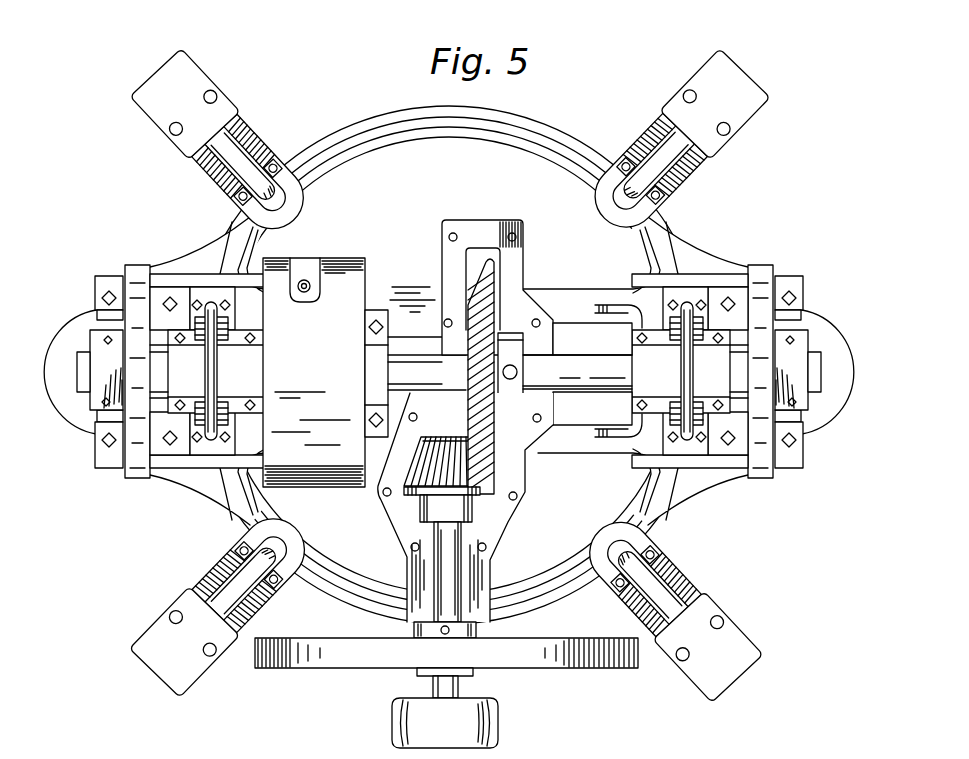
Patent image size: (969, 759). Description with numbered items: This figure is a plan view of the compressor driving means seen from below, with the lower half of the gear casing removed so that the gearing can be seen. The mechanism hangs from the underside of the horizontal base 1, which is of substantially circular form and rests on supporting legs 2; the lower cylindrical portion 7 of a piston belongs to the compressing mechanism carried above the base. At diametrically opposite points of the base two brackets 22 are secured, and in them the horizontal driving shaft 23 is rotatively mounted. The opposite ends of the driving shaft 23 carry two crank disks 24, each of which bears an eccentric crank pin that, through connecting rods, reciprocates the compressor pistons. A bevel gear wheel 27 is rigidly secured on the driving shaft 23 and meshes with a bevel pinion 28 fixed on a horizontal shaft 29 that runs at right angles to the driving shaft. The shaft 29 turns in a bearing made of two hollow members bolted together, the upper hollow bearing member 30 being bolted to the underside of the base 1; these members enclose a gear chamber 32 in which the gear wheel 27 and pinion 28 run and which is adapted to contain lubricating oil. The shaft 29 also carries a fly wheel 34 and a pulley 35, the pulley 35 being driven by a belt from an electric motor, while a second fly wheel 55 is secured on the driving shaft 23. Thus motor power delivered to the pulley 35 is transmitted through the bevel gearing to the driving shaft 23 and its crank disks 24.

The horizontal base 1 is at (493, 125).
The supporting legs 2 is at (214, 580).
The lower cylindrical portion of piston 7 is at (591, 265).
The brackets 22 is at (209, 302).
The horizontal driving shaft 23 is at (600, 353).
The crank disks 24 is at (139, 470).
The bevel gear wheel 27 is at (492, 437).
The bevel pinion 28 is at (470, 512).
The horizontal shaft 29 is at (444, 585).
The upper hollow bearing member 30 is at (512, 491).
The gear chamber 32 is at (414, 503).
The fly wheel 34 is at (547, 647).
The pulley 35 is at (460, 727).
The fly wheel 55 is at (314, 372).